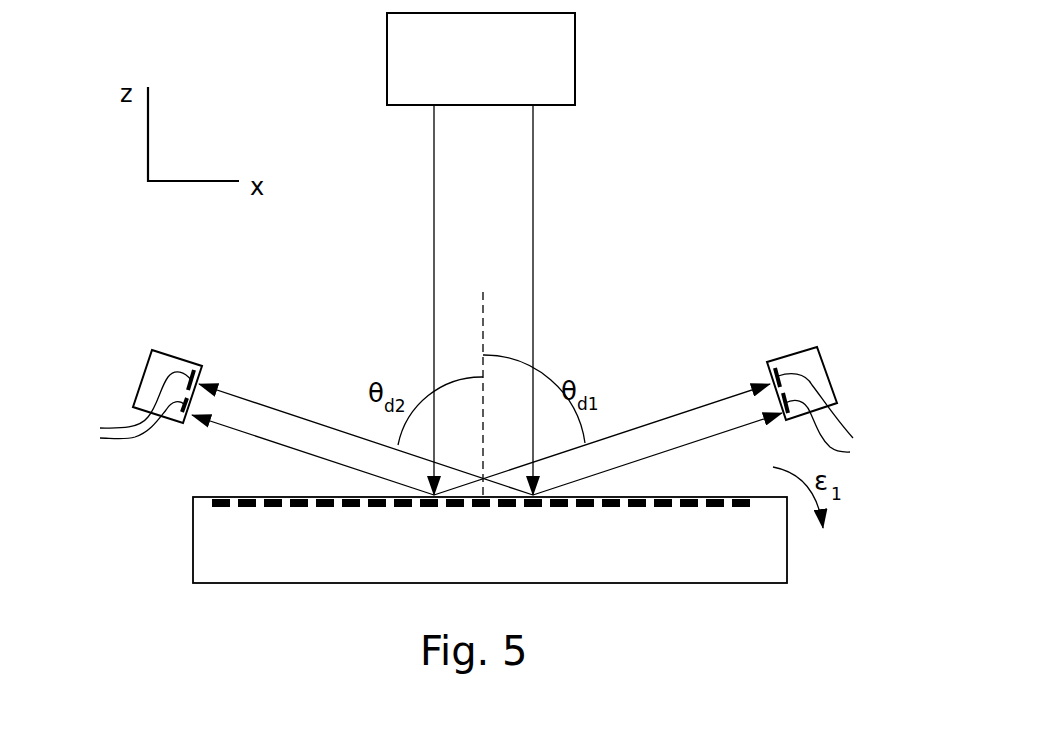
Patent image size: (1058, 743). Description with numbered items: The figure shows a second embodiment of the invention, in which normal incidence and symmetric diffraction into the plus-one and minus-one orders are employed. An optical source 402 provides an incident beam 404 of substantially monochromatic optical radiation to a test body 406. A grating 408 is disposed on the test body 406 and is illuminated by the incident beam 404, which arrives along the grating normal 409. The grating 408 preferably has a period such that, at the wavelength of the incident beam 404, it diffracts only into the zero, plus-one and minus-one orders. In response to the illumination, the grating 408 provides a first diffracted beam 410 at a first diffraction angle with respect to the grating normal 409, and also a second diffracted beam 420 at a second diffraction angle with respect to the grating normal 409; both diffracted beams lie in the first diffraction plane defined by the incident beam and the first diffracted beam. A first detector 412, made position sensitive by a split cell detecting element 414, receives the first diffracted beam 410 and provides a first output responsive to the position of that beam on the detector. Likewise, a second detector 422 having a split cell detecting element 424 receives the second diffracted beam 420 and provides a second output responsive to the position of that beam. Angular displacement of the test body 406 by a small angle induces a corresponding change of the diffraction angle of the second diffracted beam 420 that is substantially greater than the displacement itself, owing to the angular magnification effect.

The optical source 402 is at (575, 60).
The incident beam 404 is at (533, 183).
The test body 406 is at (193, 547).
The grating 408 is at (657, 528).
The grating normal 409 is at (483, 335).
The first diffracted beam 410 is at (655, 424).
The first detector 412 is at (807, 352).
The split cell detecting element 414 is at (843, 418).
The second diffracted beam 420 is at (300, 417).
The second detector 422 is at (152, 352).
The split cell detecting element 424 is at (119, 409).